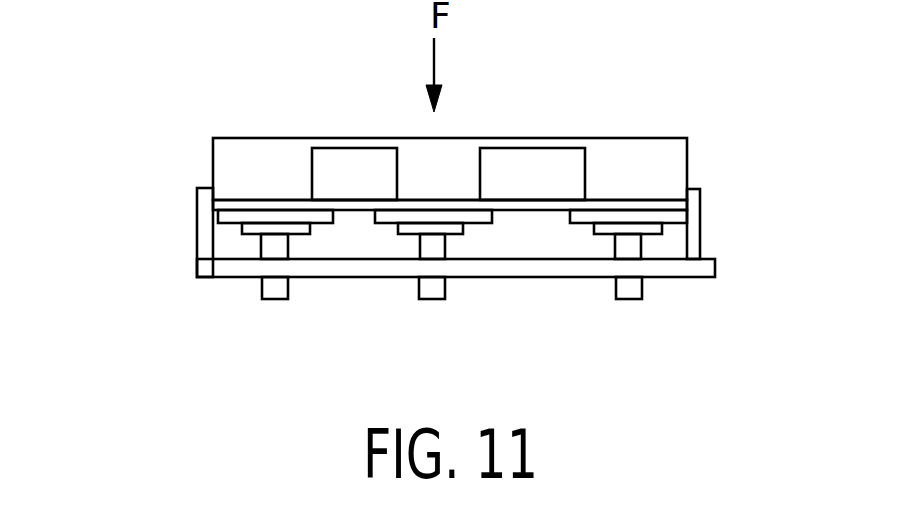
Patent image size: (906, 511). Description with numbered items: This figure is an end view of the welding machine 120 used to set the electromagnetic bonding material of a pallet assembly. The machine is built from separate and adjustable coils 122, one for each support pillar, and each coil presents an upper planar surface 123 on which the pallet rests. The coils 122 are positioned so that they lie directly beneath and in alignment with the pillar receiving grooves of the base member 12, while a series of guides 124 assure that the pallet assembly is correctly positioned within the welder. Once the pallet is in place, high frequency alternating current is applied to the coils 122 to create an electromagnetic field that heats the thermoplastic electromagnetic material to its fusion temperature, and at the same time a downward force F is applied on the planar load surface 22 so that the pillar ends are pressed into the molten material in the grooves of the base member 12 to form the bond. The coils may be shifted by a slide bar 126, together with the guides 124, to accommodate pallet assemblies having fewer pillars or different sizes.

The base member 12 is at (675, 202).
The planar load surface 22 is at (295, 138).
The welding machine 120 is at (120, 215).
The coils 122 is at (293, 225).
The upper planar surface 123 is at (237, 218).
The guides 124 is at (197, 228).
The slide bar 126 is at (663, 272).